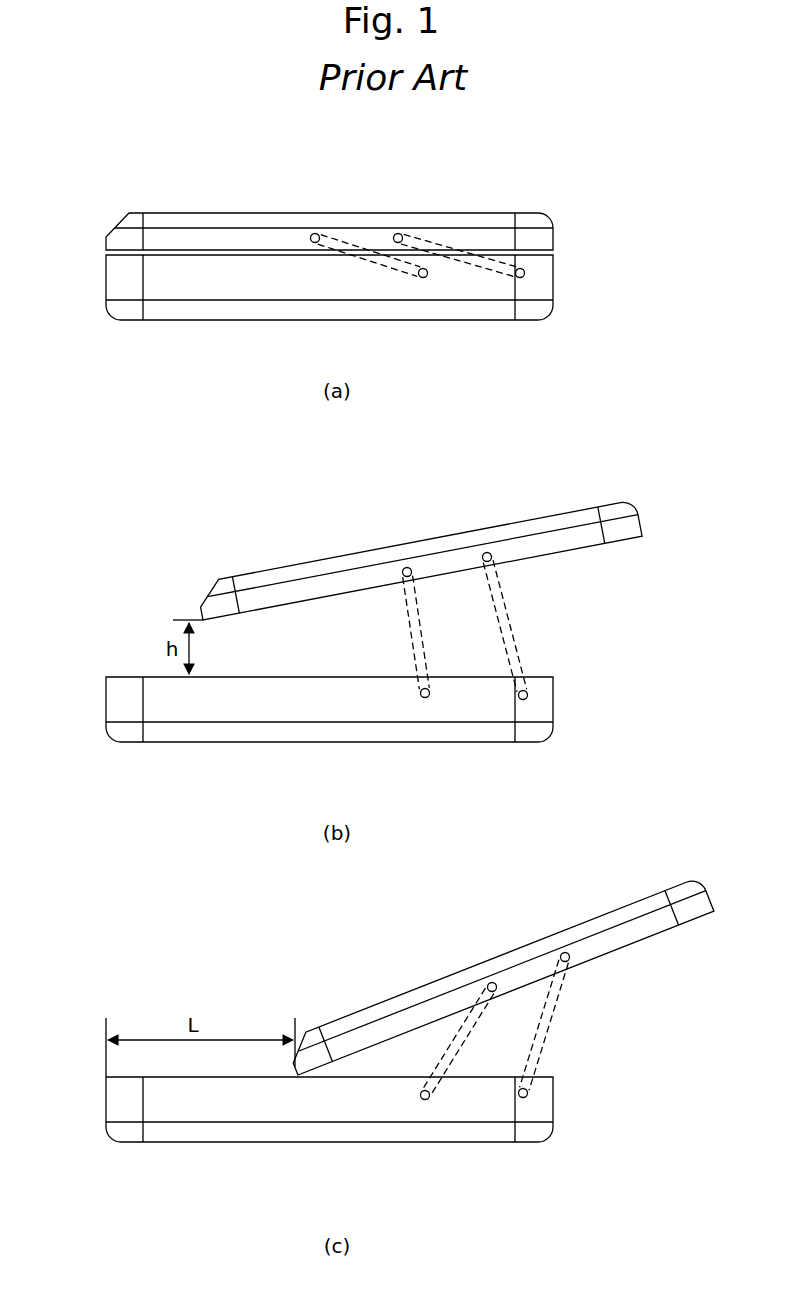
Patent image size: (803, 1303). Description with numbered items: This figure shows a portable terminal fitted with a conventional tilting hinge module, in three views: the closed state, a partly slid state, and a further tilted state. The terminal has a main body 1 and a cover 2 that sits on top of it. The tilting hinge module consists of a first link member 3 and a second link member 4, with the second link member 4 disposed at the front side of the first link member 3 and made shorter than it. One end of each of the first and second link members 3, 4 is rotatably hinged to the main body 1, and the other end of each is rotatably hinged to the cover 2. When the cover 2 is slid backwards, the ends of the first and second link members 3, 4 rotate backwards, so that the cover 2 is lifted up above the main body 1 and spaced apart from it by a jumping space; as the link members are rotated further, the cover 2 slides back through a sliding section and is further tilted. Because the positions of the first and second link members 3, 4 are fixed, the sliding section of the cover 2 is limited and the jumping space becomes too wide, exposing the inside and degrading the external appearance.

The main body 1 is at (248, 272).
The cover 2 is at (213, 236).
The first link member 3 is at (430, 240).
The second link member 4 is at (349, 240).